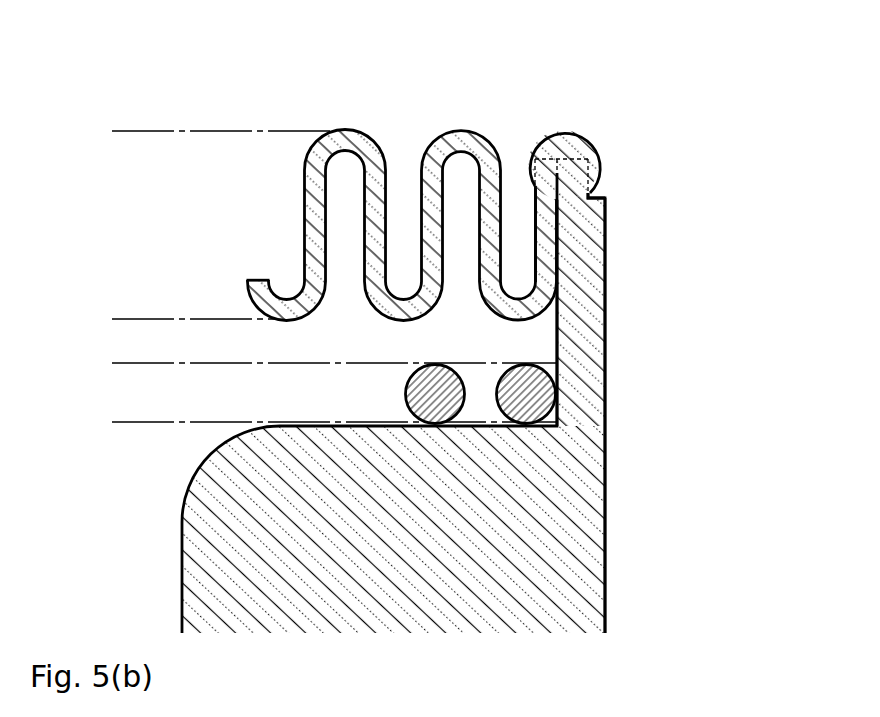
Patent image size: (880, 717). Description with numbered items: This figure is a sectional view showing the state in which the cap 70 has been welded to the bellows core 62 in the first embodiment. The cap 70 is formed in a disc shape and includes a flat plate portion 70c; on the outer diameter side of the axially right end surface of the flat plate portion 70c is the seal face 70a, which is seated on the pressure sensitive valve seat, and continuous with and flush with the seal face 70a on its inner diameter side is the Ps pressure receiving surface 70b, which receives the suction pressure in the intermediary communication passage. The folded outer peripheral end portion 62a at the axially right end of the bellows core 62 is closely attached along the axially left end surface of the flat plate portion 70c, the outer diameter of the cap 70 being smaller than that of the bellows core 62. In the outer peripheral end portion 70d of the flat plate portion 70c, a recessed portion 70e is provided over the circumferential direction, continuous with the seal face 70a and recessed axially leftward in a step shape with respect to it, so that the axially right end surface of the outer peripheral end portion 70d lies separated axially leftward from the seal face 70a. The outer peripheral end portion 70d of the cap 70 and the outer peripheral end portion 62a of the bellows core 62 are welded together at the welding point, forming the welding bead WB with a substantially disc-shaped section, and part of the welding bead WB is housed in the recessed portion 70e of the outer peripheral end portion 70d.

The bellows core 62 is at (337, 107).
The outer peripheral end portion of the bellows core 62a is at (534, 189).
The welding bead WB is at (562, 143).
The cap 70 is at (640, 477).
The seal face 70a is at (607, 222).
The Ps pressure receiving surface 70b is at (607, 538).
The flat plate portion 70c is at (580, 343).
The outer peripheral end portion of the cap 70d is at (576, 160).
The recessed portion 70e is at (592, 196).